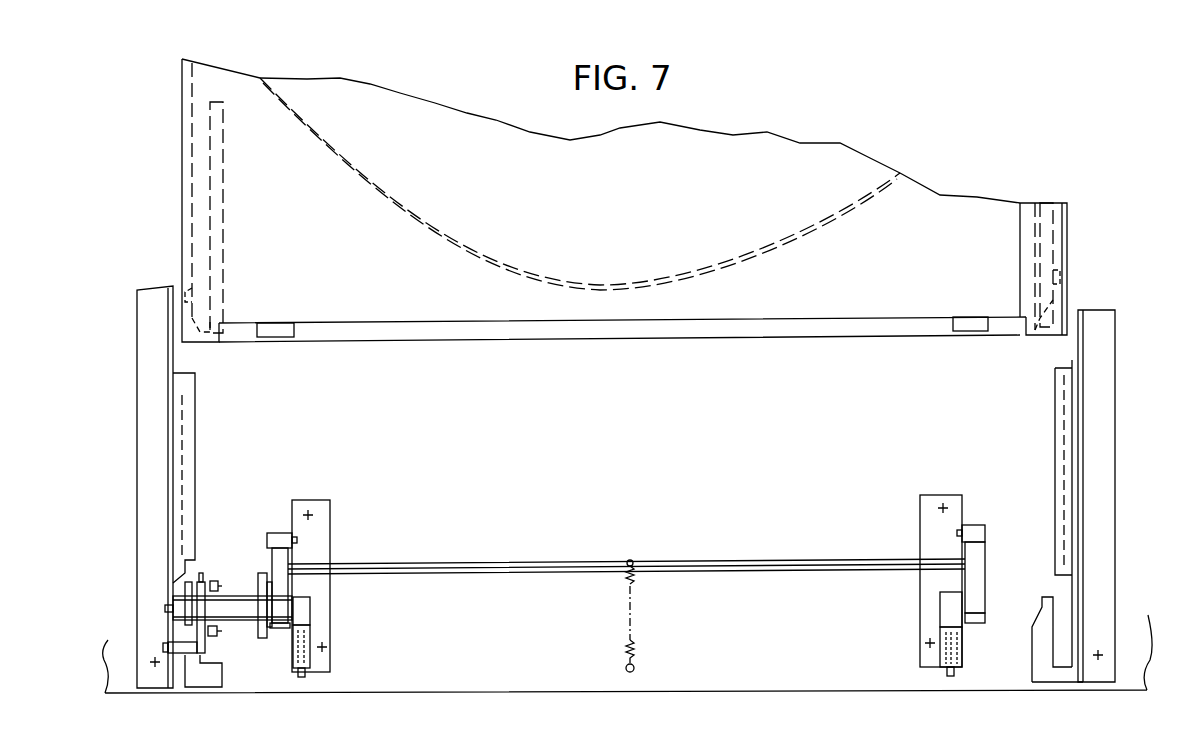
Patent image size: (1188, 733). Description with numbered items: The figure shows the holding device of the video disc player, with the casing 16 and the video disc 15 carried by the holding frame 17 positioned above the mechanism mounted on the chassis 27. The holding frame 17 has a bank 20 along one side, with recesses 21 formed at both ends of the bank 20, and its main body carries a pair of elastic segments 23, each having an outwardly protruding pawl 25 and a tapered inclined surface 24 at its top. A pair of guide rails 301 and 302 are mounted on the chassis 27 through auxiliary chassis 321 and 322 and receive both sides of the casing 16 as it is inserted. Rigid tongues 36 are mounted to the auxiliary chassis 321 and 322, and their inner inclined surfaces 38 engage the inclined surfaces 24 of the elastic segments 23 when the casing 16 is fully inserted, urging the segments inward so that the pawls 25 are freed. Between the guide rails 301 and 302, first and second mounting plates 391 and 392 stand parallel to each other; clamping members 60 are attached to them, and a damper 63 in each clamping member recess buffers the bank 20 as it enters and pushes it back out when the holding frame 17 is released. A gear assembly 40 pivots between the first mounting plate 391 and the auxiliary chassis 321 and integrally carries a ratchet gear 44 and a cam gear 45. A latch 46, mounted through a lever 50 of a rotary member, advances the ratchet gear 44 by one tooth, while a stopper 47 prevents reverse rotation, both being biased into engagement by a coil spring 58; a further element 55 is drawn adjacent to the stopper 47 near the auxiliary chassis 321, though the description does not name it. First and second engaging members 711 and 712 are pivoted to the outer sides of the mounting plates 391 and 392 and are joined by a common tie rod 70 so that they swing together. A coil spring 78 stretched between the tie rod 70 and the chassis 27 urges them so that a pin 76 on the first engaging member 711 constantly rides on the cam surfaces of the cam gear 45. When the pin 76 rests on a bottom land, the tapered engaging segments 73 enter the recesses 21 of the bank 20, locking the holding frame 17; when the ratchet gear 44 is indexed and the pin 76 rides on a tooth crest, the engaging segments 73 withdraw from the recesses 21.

The video disc 15 is at (469, 120).
The casing 16 is at (976, 197).
The holding frame 17 is at (712, 338).
The bank 20 is at (435, 342).
The recesses 21 is at (276, 337).
The elastic segments 23 is at (200, 203).
The inclined surface 24 is at (1046, 333).
The pawl 25 is at (187, 287).
The chassis 27 is at (1142, 676).
The rigid tongues 36 is at (634, 656).
The inclined surfaces 38 is at (1037, 624).
The gear assembly 40 is at (238, 628).
The ratchet gear 44 is at (205, 636).
The cam gear 45 is at (265, 638).
The latch 46 is at (204, 579).
The stopper 47 is at (195, 660).
The lever 50 is at (188, 598).
The mounting block 55 is at (180, 645).
The coil spring 58 is at (218, 586).
The clamping members 60 is at (319, 614).
The damper 63 is at (312, 660).
The tie rod 70 is at (531, 562).
The engaging segment 73 is at (286, 627).
The pin 76 is at (261, 581).
The coil spring 78 is at (637, 650).
The guide rail 301 is at (204, 461).
The guide rail 302 is at (1046, 421).
The auxiliary chassis 321 is at (168, 503).
The auxiliary chassis 322 is at (1083, 575).
The first mounting plate 391 is at (305, 500).
The second mounting plate 392 is at (940, 495).
The first engaging member 711 is at (267, 541).
The second engaging member 712 is at (982, 580).